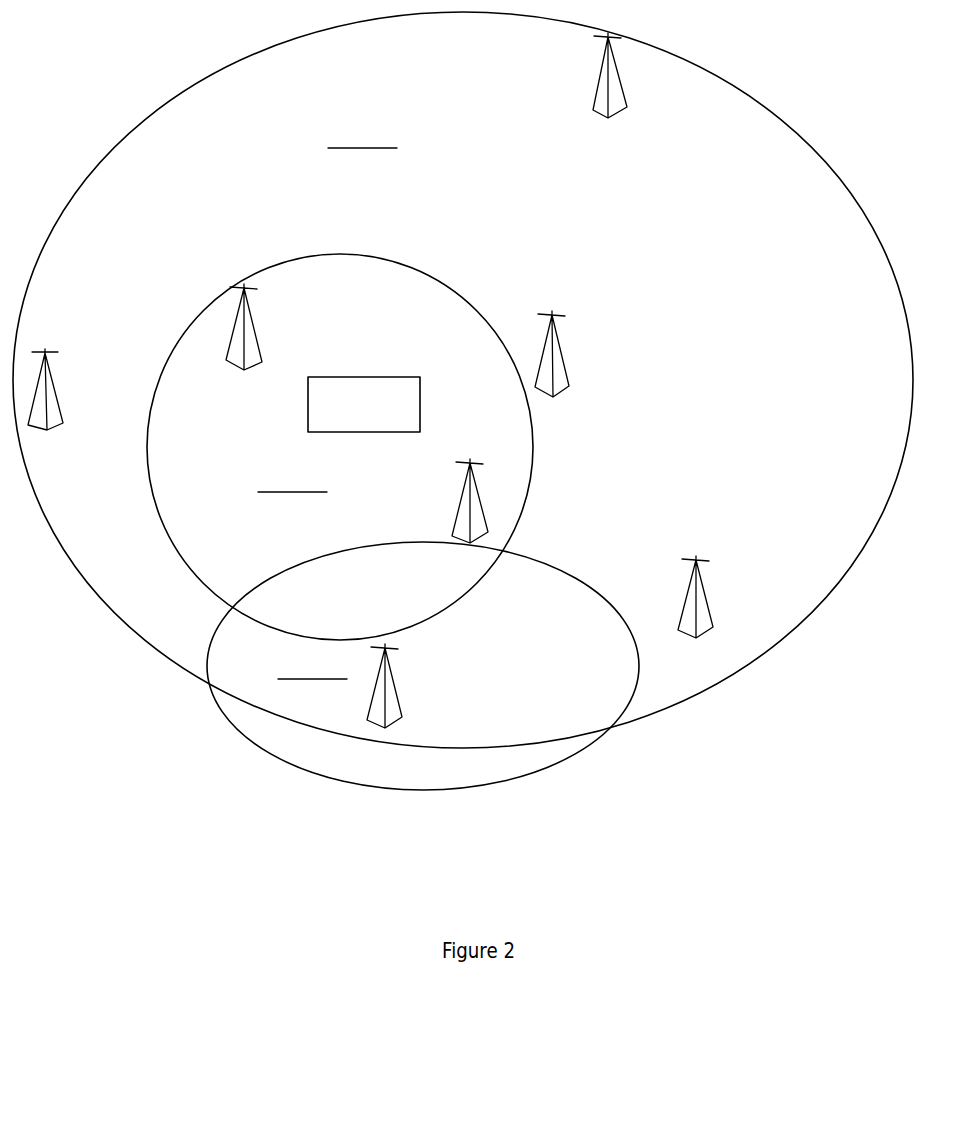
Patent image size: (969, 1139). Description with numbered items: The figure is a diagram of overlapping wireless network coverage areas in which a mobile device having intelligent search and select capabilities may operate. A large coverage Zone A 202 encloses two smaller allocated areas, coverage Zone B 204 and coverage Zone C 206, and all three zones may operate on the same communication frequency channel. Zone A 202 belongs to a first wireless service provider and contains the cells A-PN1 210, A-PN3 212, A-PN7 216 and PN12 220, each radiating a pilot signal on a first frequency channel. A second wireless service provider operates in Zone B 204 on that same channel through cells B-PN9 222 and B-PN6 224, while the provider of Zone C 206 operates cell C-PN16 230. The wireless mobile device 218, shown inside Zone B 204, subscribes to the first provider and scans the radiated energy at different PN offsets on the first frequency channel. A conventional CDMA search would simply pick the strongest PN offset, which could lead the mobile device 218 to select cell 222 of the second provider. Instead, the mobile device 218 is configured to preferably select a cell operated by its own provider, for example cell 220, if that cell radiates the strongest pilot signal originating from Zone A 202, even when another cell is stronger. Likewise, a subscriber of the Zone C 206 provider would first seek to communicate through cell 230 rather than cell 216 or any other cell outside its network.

The coverage Zone A 202 is at (96, 158).
The coverage Zone B 204 is at (190, 312).
The coverage Zone C 206 is at (478, 783).
The cell A-PN1 210 is at (62, 410).
The cell A-PN3 212 is at (600, 100).
The cell A-PN7 216 is at (712, 612).
The wireless mobile device 218 is at (421, 404).
The cell PN12 220 is at (563, 362).
The cell B-PN9 222 is at (260, 340).
The cell B-PN6 224 is at (487, 527).
The cell C-PN16 230 is at (402, 700).